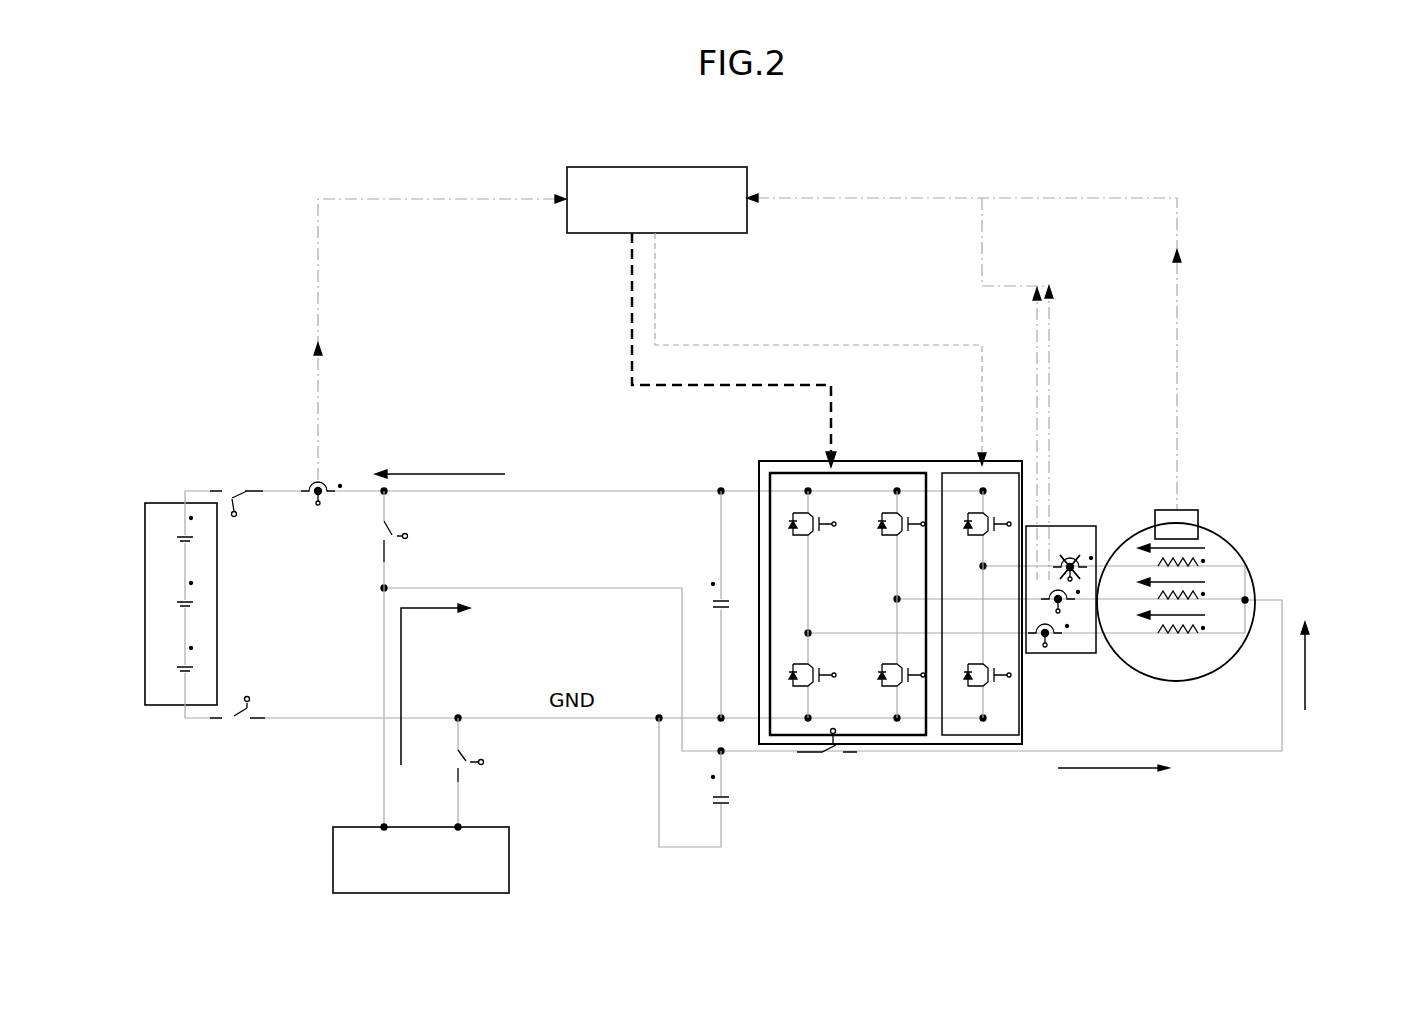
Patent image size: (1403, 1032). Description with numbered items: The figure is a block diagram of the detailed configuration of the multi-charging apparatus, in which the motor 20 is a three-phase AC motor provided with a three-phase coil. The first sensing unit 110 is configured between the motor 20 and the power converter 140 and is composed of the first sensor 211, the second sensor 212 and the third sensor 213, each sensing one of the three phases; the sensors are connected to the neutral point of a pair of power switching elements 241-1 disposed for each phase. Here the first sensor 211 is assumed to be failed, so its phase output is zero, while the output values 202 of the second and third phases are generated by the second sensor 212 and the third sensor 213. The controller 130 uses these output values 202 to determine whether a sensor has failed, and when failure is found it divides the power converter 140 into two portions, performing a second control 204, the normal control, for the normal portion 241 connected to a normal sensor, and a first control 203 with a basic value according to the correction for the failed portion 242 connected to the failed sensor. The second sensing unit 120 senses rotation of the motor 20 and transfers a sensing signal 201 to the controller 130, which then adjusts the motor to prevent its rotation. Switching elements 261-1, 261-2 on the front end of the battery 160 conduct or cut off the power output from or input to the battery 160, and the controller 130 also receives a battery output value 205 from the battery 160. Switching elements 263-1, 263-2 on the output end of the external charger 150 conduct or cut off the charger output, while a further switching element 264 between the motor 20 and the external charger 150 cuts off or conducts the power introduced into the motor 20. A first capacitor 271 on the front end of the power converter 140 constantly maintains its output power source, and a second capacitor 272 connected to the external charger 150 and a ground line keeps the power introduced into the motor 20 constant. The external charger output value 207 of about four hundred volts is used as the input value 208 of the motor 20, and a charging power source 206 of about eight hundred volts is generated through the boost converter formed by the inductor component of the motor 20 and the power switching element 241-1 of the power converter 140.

The controller 130 is at (654, 167).
The battery output value 205 is at (440, 198).
The sensing signal 201 is at (1178, 300).
The output value 202 is at (1050, 345).
The first control 203 is at (822, 344).
The second control 204 is at (730, 384).
The battery 160 is at (150, 503).
The switching element 261-1 is at (237, 491).
The switching element 261-2 is at (248, 697).
The charging power source 206 is at (437, 474).
The external charger output value 207 is at (432, 608).
The switching element 263-1 is at (410, 535).
The switching element 263-2 is at (484, 762).
The first capacitor 271 is at (714, 586).
The second capacitor 272 is at (717, 802).
The power converter 140 is at (778, 744).
The normal portion 241 is at (830, 607).
The power switching element 241-1 is at (800, 512).
The failed portion 242 is at (983, 737).
The switching element 264 is at (831, 752).
The first sensing unit 110 is at (1156, 659).
The first sensor 211 is at (1070, 580).
The second sensor 212 is at (1058, 612).
The third sensor 213 is at (1045, 646).
The second sensing unit 120 is at (1190, 510).
The motor 20 is at (1255, 556).
The input value 208 is at (1308, 670).
The external charger 150 is at (333, 856).